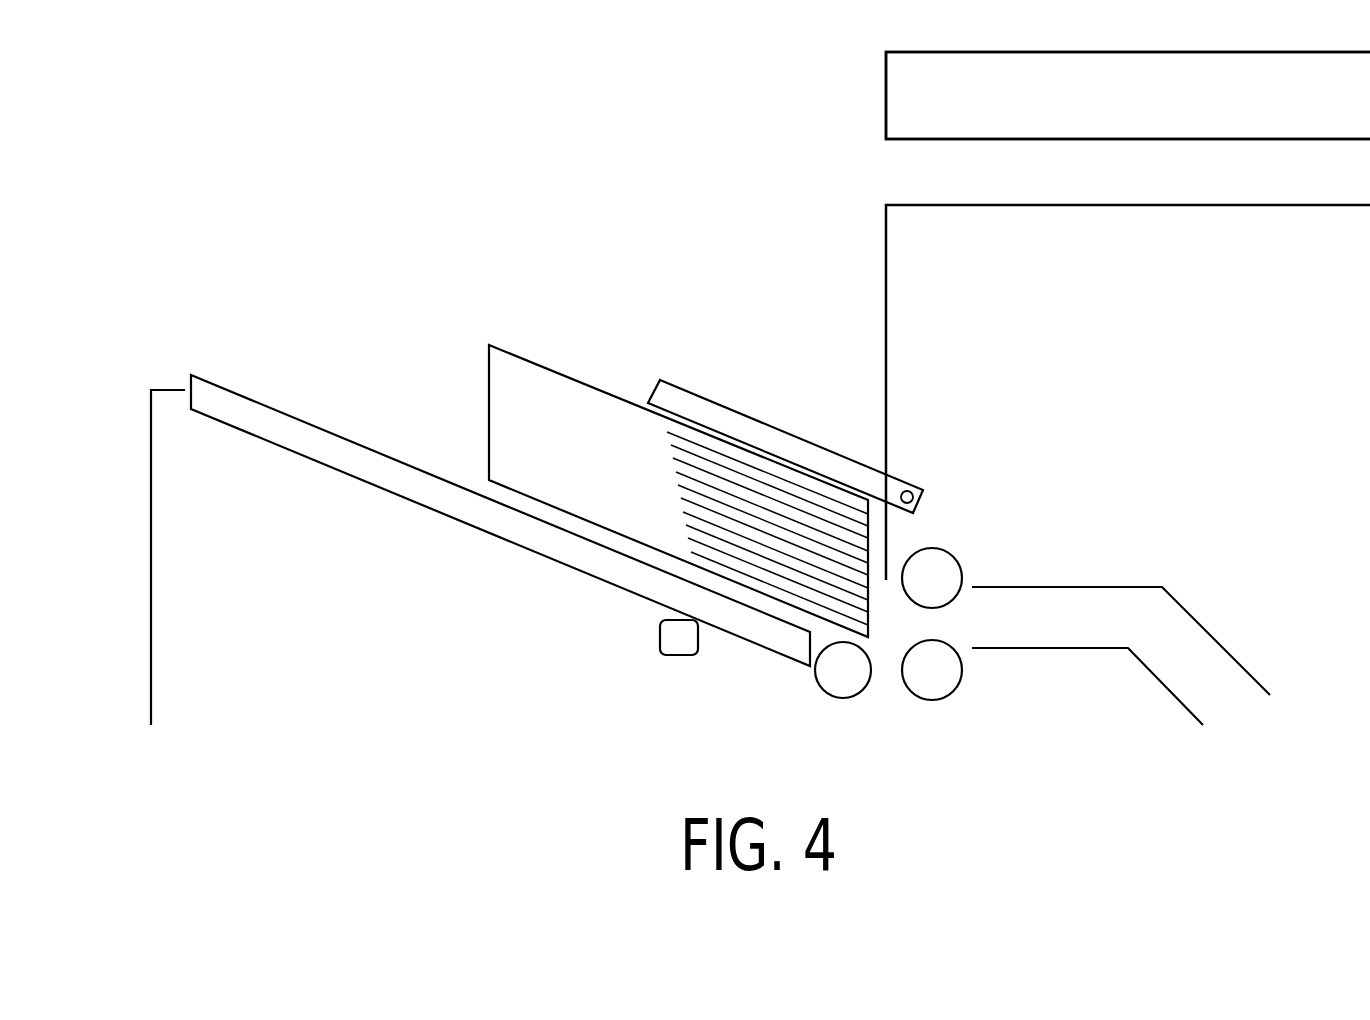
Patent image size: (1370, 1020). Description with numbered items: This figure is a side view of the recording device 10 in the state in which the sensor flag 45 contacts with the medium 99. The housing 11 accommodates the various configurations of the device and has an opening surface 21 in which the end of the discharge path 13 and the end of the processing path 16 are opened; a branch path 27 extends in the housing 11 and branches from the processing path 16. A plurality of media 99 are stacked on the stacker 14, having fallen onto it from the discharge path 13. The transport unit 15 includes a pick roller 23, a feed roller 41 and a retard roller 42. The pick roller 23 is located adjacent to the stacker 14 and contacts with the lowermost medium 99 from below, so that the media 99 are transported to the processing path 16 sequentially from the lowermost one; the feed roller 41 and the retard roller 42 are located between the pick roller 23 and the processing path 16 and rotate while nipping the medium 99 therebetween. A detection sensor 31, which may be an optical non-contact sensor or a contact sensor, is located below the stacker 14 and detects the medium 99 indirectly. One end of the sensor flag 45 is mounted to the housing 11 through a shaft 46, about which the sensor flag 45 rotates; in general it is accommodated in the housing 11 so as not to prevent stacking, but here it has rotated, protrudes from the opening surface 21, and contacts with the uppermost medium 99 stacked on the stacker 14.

The recording device 10 is at (200, 108).
The housing 11 is at (150, 513).
The discharge path 13 is at (1168, 138).
The stacker 14 is at (189, 379).
The transport unit 15 is at (1043, 530).
The processing path 16 is at (1199, 622).
The opening surface 21 is at (884, 98).
The pick roller 23 is at (843, 699).
The branch path 27 is at (1167, 207).
The detection sensor 31 is at (680, 657).
The feed roller 41 is at (950, 554).
The retard roller 42 is at (930, 701).
The sensor flag 45 is at (762, 421).
The shaft 46 is at (911, 482).
The medium 99 is at (488, 380).